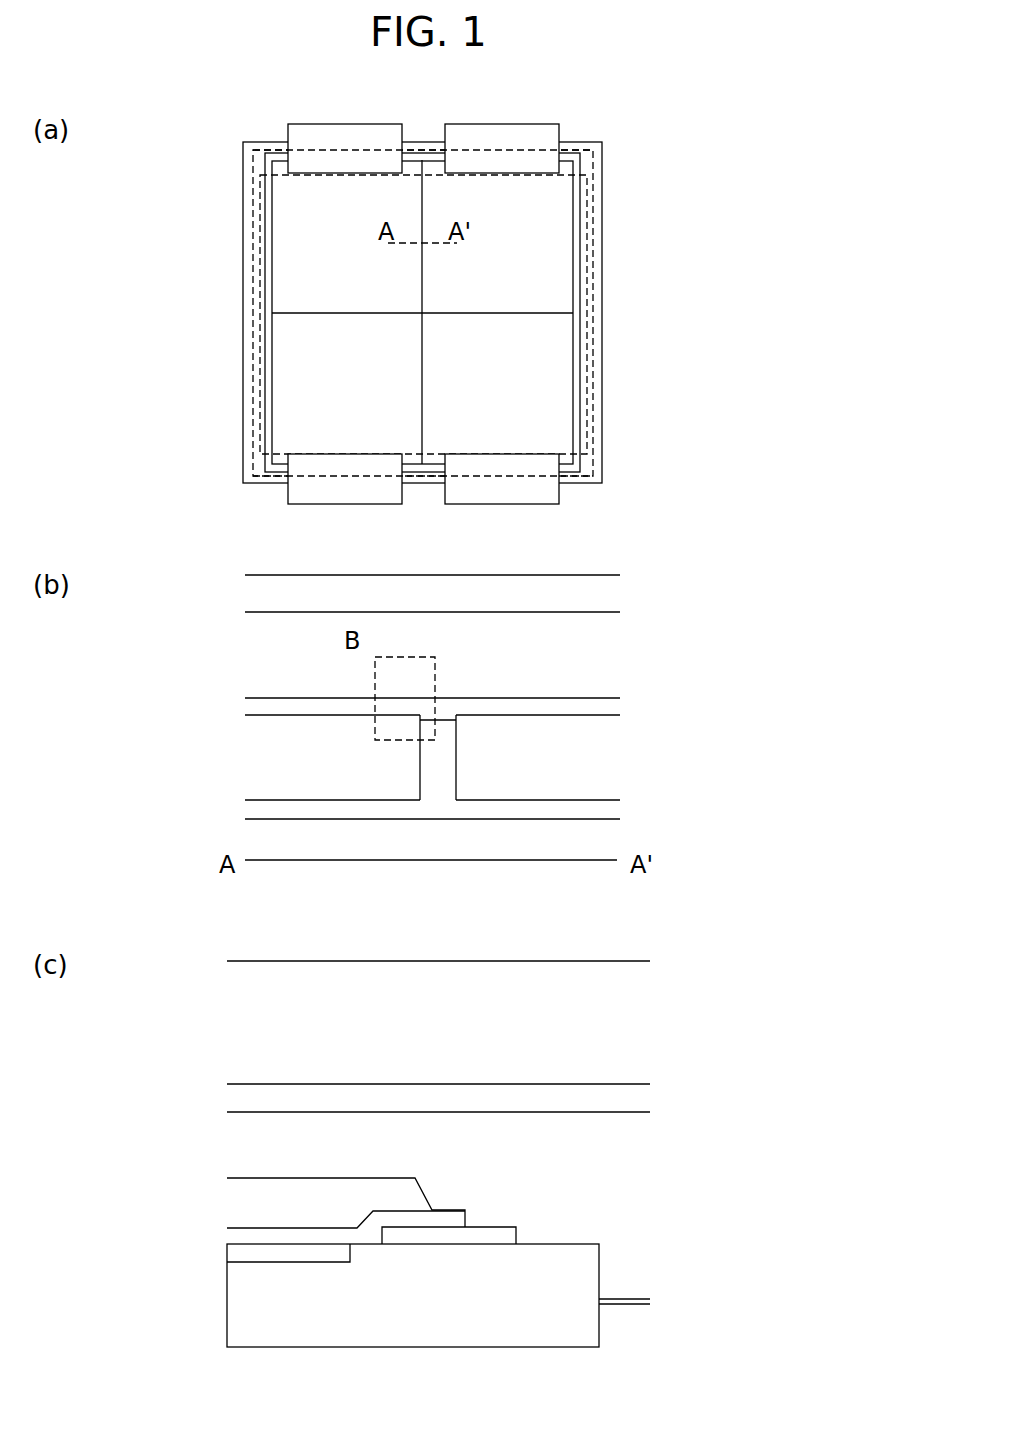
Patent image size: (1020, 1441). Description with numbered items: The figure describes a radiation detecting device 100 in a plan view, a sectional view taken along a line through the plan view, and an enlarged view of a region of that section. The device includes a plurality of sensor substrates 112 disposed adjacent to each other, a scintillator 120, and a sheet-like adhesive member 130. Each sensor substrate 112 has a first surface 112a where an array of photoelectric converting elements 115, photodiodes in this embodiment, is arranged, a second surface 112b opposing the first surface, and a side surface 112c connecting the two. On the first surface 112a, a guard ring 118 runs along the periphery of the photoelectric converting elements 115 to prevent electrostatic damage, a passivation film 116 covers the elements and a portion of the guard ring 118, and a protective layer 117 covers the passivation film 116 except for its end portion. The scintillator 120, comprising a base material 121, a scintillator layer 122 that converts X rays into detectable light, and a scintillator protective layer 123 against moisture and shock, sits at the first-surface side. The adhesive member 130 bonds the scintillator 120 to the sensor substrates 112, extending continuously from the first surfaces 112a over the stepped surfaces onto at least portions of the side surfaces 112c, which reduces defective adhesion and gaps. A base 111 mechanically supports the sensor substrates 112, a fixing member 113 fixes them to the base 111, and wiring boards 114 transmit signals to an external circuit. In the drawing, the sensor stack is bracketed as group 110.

The radiation detecting device 100 is at (466, 304).
The capacitor body 110 is at (706, 240).
The base 111 is at (604, 248).
The sensor substrate 112 is at (412, 283).
The first surface 112a is at (290, 715).
The second surface 112b is at (305, 800).
The side surface 112c is at (418, 762).
The fixing member 113 is at (583, 285).
The wiring board 114 is at (560, 490).
The photoelectric converting element 115 is at (290, 1255).
The passivation film 116 is at (413, 1220).
The protective layer 117 is at (278, 1203).
The guard ring 118 is at (483, 1240).
The scintillator 120 is at (706, 363).
The base material 121 is at (587, 373).
The scintillator layer 122 is at (595, 413).
The scintillator protective layer 123 is at (258, 1099).
The adhesive member 130 is at (608, 708).